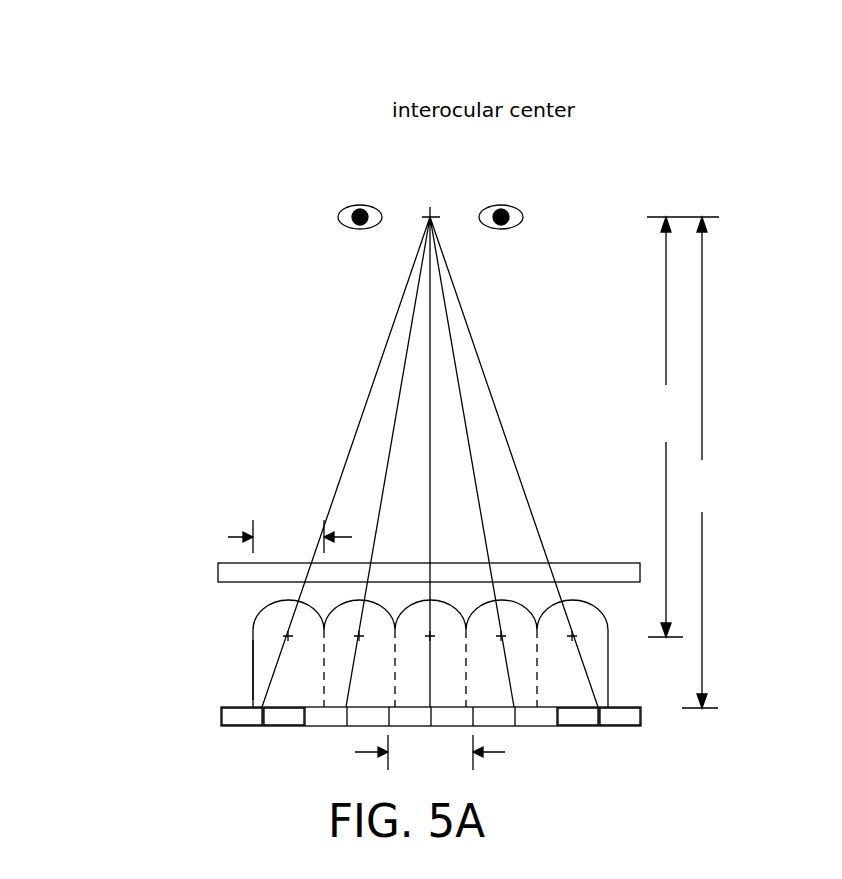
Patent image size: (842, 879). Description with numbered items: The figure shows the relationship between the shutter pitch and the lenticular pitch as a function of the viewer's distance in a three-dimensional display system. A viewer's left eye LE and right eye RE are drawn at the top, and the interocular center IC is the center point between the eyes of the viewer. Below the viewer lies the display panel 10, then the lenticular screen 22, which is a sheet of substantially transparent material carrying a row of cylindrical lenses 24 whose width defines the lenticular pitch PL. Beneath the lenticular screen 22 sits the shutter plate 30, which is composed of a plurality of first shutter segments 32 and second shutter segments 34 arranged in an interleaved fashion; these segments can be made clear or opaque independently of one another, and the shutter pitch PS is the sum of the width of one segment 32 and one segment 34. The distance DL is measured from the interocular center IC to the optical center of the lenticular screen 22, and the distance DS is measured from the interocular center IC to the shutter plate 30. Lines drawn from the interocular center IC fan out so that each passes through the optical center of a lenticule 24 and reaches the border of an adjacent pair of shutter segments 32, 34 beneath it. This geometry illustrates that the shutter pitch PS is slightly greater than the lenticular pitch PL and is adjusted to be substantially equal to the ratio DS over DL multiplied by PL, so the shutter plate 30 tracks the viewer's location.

The display panel 10 is at (215, 571).
The lenticular screen 22 is at (231, 640).
The cylindrical lens 24 is at (263, 655).
The shutter plate 30 is at (643, 720).
The first shutter segment 32 is at (240, 722).
The second shutter segment 34 is at (283, 722).
The left eye LE is at (360, 197).
The right eye RE is at (501, 197).
The interocular center IC is at (437, 215).
The distance from the interocular center to the optical center of the lenticular scr DL is at (683, 427).
The distance from the interocular center to the shutter plate DS is at (700, 462).
The pitch of the lenticular screen PL is at (290, 536).
The pitch of the shutter plate PS is at (430, 752).